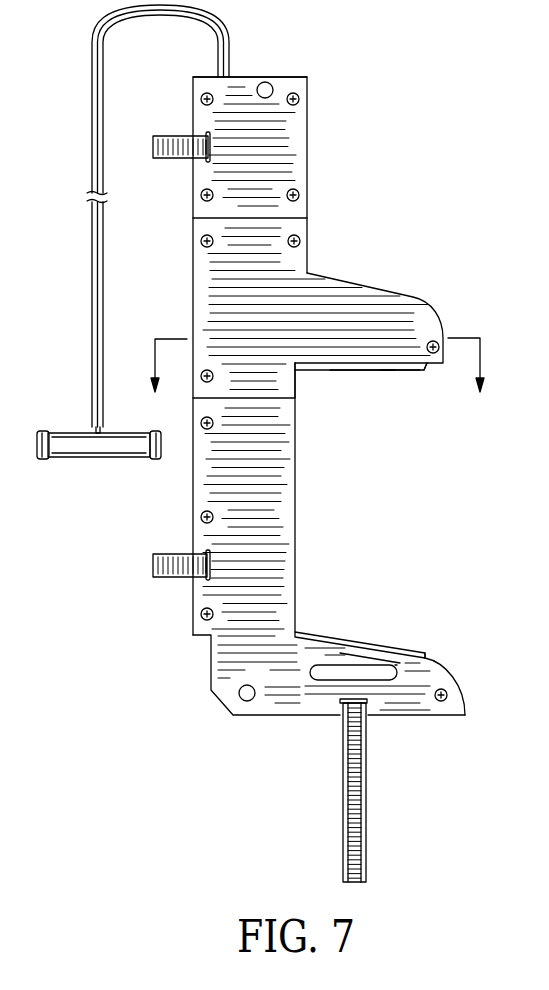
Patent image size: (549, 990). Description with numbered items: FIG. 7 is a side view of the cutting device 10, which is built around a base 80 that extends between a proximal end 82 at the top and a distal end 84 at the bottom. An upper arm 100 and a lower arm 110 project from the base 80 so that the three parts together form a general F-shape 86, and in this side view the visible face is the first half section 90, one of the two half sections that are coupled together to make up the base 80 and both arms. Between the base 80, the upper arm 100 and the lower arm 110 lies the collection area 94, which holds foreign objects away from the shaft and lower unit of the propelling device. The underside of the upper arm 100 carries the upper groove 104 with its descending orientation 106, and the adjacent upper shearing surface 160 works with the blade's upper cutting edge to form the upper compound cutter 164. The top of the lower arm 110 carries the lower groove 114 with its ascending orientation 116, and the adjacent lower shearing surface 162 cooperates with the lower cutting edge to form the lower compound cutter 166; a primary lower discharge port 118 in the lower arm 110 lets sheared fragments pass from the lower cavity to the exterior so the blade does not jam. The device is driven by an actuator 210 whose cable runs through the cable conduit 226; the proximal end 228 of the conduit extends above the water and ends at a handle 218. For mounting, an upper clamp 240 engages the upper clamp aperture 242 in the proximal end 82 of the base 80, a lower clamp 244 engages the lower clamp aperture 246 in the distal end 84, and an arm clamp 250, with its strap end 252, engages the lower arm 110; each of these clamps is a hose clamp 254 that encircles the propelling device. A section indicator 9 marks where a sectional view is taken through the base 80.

The section line 9- 9 is at (317, 381).
The cutting device 10 is at (304, 108).
The base 80 is at (306, 160).
The proximal end 82 is at (262, 77).
The distal end 84 is at (222, 708).
The general F-shape 86 is at (308, 79).
The first half section 90 is at (200, 517).
The collection area 94 is at (413, 510).
The upper arm 100 is at (401, 294).
The upper groove 104 is at (426, 370).
The descending orientation 106 is at (400, 371).
The lower arm 110 is at (466, 690).
The lower groove 114 is at (436, 659).
The ascending orientation 116 is at (352, 642).
The primary lower discharge port 118 is at (388, 668).
The upper shearing surface 160 is at (328, 371).
The lower shearing surface 162 is at (336, 634).
The upper compound cutter 164 is at (362, 371).
The lower compound cutter 166 is at (378, 664).
The handle end cap 210 is at (54, 457).
The handle bar 218 is at (100, 457).
The cable conduit 226 is at (92, 290).
The proximal end 228 is at (92, 418).
The upper clamp 240 is at (170, 135).
The upper clamp aperture 242 is at (178, 159).
The lower clamp 244 is at (153, 574).
The lower clamp aperture 246 is at (163, 578).
The arm clamp 250 is at (367, 793).
The rod head 252 is at (340, 704).
The hose clamp 254 is at (153, 146).